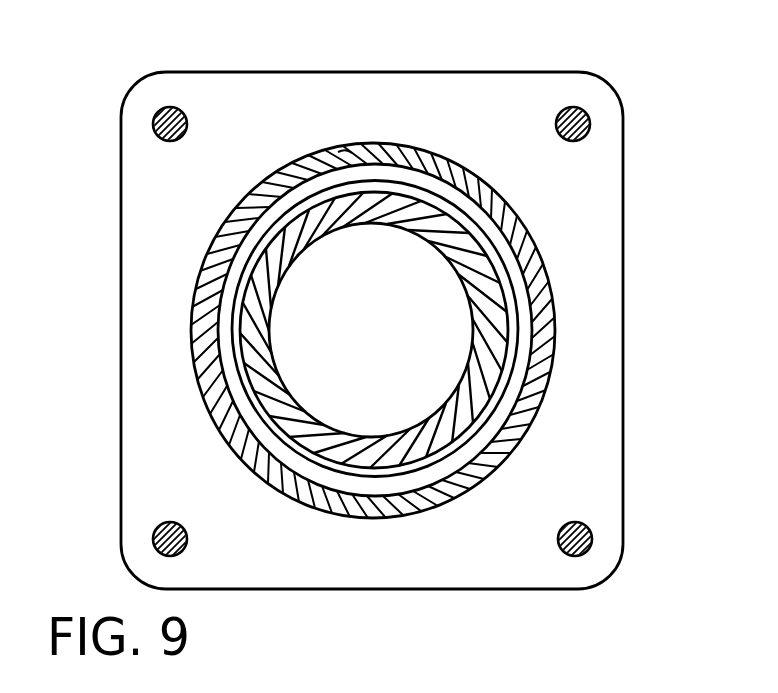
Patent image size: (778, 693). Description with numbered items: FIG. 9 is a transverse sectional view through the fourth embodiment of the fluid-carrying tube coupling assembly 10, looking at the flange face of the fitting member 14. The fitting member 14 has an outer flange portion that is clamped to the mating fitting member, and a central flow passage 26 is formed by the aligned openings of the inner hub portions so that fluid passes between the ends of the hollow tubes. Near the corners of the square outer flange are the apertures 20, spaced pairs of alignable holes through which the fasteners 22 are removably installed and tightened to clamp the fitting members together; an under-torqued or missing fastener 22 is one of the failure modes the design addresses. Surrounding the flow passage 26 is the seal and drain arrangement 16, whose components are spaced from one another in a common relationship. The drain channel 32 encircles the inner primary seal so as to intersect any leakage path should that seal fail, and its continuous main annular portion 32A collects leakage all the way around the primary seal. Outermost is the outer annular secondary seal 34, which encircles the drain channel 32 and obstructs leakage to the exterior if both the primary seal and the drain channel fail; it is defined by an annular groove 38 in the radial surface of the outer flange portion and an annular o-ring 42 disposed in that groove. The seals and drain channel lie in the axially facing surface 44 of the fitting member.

The tube coupling assembly 10 is at (655, 75).
The fitting member 14 is at (636, 381).
The seal and drain arrangement 16 is at (574, 280).
The apertures 20 is at (153, 129).
The fasteners 22 is at (172, 107).
The flow passage 26 is at (360, 436).
The drain channel 32 is at (486, 330).
The main annular portion 32A is at (500, 262).
The outer annular secondary seal 34 is at (303, 273).
The annular groove 38 is at (339, 153).
The annular o-ring 42 is at (205, 273).
The axially facing surface 44 is at (487, 132).